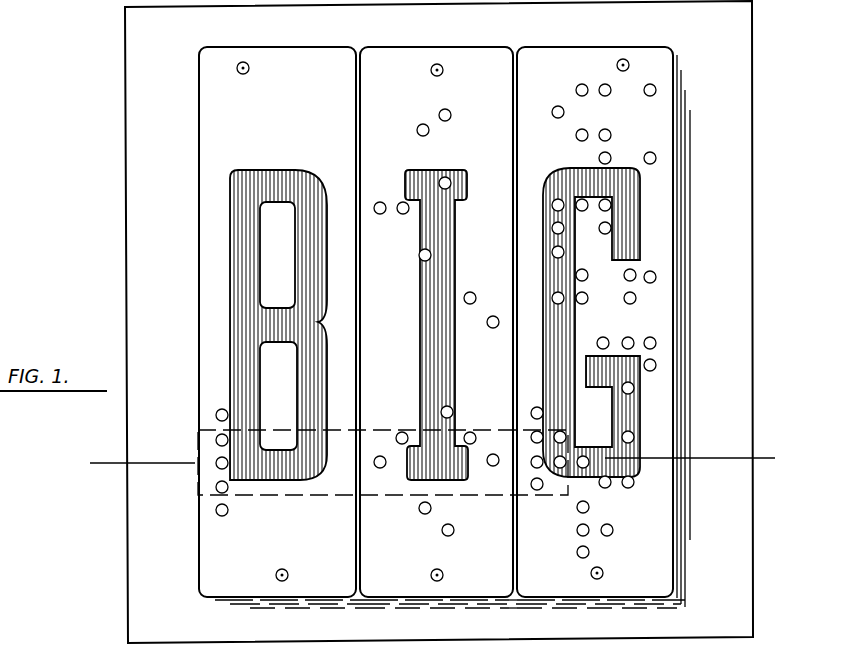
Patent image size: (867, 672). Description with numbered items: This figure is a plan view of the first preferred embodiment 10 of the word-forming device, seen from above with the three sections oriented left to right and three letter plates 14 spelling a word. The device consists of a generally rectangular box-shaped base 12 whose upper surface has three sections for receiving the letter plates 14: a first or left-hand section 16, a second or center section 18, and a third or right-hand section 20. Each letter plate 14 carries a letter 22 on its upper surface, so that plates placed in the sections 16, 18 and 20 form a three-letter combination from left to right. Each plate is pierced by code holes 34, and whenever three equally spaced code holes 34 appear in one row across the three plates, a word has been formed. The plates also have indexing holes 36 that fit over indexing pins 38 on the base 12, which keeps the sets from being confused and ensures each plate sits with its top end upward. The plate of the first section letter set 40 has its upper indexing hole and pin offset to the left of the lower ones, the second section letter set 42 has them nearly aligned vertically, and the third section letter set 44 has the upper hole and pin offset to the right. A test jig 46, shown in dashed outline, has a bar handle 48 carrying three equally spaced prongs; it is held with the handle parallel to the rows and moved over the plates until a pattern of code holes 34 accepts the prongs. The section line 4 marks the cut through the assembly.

The first preferred embodiment 10 is at (121, 90).
The base 12 is at (130, 176).
The letter plates 14 is at (327, 57).
The first section 16 is at (268, 603).
The second section 18 is at (456, 597).
The third section 20 is at (629, 597).
The letter indicia 22 is at (245, 248).
The code holes 34 is at (443, 110).
The indexing holes 36 is at (249, 70).
The indexing pins 38 is at (243, 63).
The first section letter set 40 is at (199, 148).
The second section letter set 42 is at (360, 153).
The third section letter set 44 is at (678, 126).
The test jig 46 is at (300, 497).
The bar handle 48 is at (601, 636).
The section line 4- 4 is at (107, 412).